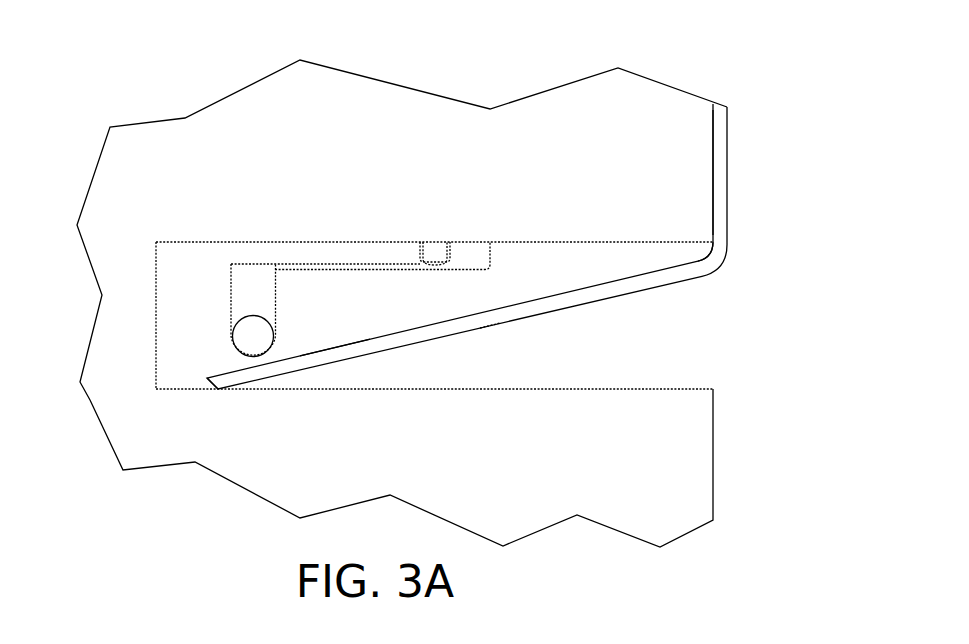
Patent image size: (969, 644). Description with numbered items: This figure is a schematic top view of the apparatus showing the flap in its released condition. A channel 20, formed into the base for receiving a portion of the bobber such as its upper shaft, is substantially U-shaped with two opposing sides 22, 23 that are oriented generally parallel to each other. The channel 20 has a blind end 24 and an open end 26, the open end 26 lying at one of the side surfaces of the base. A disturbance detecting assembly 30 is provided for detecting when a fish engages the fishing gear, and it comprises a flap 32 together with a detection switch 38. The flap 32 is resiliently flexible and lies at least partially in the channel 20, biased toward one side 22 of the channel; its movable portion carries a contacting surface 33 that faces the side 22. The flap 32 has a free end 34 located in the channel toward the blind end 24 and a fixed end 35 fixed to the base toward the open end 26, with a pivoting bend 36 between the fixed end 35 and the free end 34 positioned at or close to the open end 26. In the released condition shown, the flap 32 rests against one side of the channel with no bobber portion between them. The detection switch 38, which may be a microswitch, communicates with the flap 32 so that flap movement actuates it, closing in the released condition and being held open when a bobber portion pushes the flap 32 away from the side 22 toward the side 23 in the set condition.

The channel 20 is at (548, 241).
The side of the channel 22 is at (492, 389).
The side of the channel 23 is at (476, 242).
The blind end 24 is at (156, 305).
The open end 26 is at (678, 389).
The disturbance detecting assembly 30 is at (327, 239).
The flap 32 is at (335, 348).
The contacting surface 33 is at (490, 327).
The free end 34 is at (216, 383).
The fixed end 35 is at (713, 130).
The pivoting bend 36 is at (715, 260).
The detection switch 38 is at (277, 262).